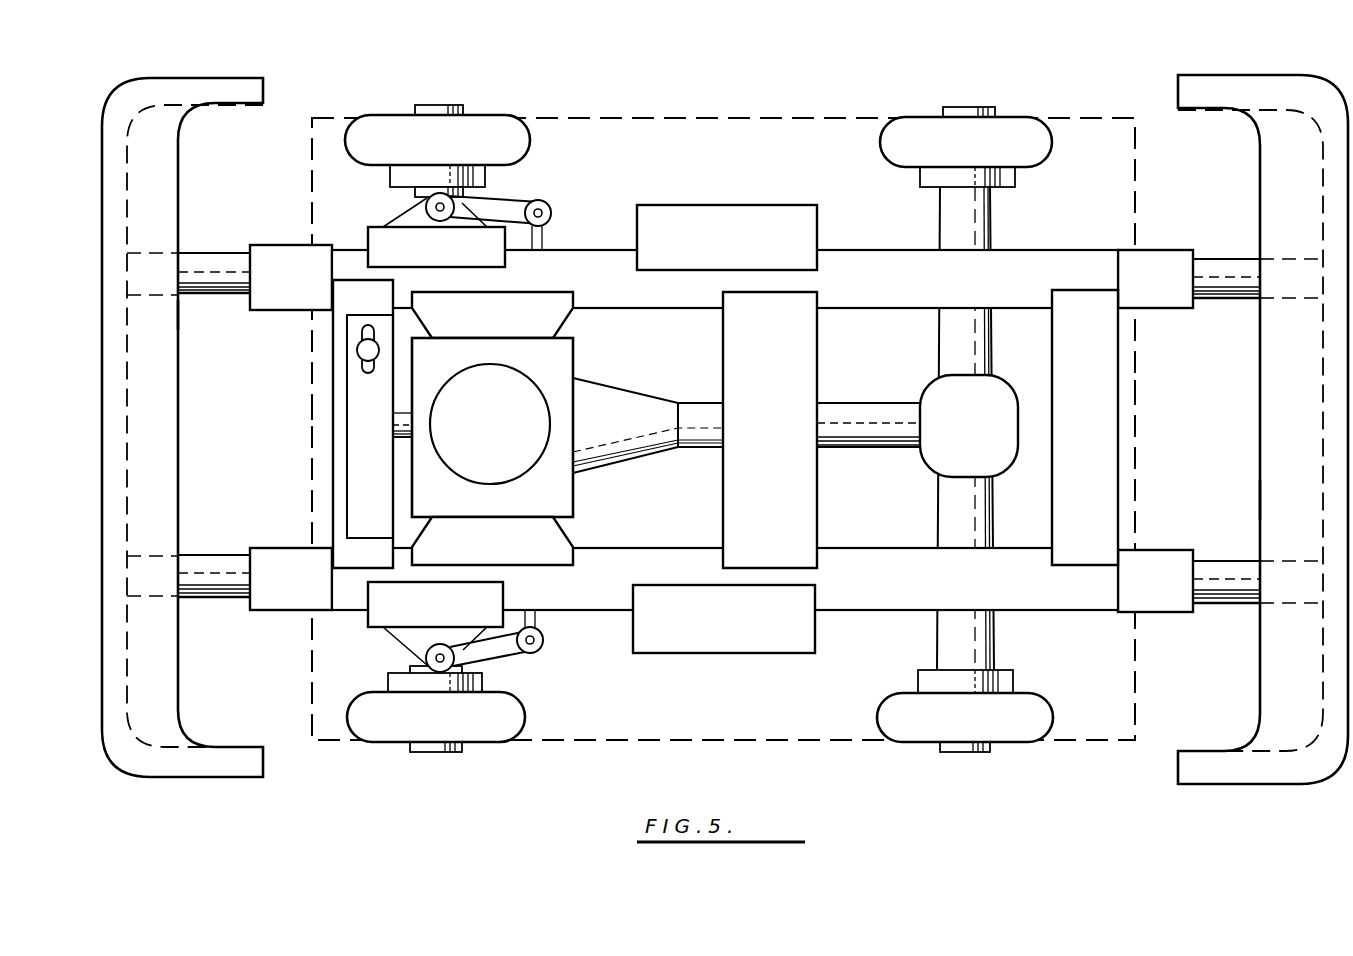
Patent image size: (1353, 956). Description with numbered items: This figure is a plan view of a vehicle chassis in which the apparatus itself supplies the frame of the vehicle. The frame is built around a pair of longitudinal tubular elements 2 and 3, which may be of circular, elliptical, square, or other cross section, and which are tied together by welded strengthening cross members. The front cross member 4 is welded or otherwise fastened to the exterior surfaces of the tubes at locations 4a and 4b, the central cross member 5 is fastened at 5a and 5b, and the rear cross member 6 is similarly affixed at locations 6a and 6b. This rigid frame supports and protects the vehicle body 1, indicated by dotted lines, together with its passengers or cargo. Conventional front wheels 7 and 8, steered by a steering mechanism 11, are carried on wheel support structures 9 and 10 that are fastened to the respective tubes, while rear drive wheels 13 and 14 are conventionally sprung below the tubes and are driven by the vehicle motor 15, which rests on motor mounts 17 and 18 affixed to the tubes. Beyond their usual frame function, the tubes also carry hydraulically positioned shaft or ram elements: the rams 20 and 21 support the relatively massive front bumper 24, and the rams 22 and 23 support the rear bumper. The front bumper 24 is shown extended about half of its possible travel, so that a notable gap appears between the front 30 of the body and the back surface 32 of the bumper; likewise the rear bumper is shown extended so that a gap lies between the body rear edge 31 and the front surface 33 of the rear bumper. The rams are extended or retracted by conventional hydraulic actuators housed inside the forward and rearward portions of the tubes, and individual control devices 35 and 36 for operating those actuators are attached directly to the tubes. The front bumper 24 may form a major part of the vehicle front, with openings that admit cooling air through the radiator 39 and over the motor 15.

The vehicle body 1 is at (737, 118).
The longitudinal tubular element 2 is at (870, 252).
The longitudinal tubular element 3 is at (908, 549).
The cross member 4 is at (323, 422).
The fastening location 4a is at (356, 292).
The fastening location 4b is at (346, 570).
The central cross member 5 is at (765, 430).
The fastening location 5a is at (795, 294).
The fastening location 5b is at (788, 567).
The rear cross member 6 is at (1064, 429).
The fastening location 6a is at (1080, 290).
The fastening location 6b is at (1082, 566).
The front wheel 7 is at (483, 112).
The front wheel 8 is at (492, 742).
The wheel support structure 9 is at (506, 262).
The wheel support structure 10 is at (505, 600).
The steering mechanism 11 is at (515, 652).
The rear drive wheel 13 is at (1010, 120).
The rear drive wheel 14 is at (1020, 742).
The vehicle motor 15 is at (578, 356).
The motor mount 17 is at (573, 300).
The motor mount 18 is at (573, 535).
The shaft or ram element 20 is at (205, 251).
The shaft or ram element 21 is at (228, 598).
The shaft or ram element 22 is at (1222, 260).
The shaft or ram element 23 is at (1212, 605).
The front bumper 24 is at (165, 730).
The front of vehicle body 30 is at (308, 412).
The body rear edge 31 is at (1138, 395).
The back surface of bumper 32 is at (180, 316).
The front surface of rear bumper 33 is at (1258, 505).
The control device 35 is at (724, 205).
The control device 36 is at (731, 654).
The radiator 39 is at (365, 498).